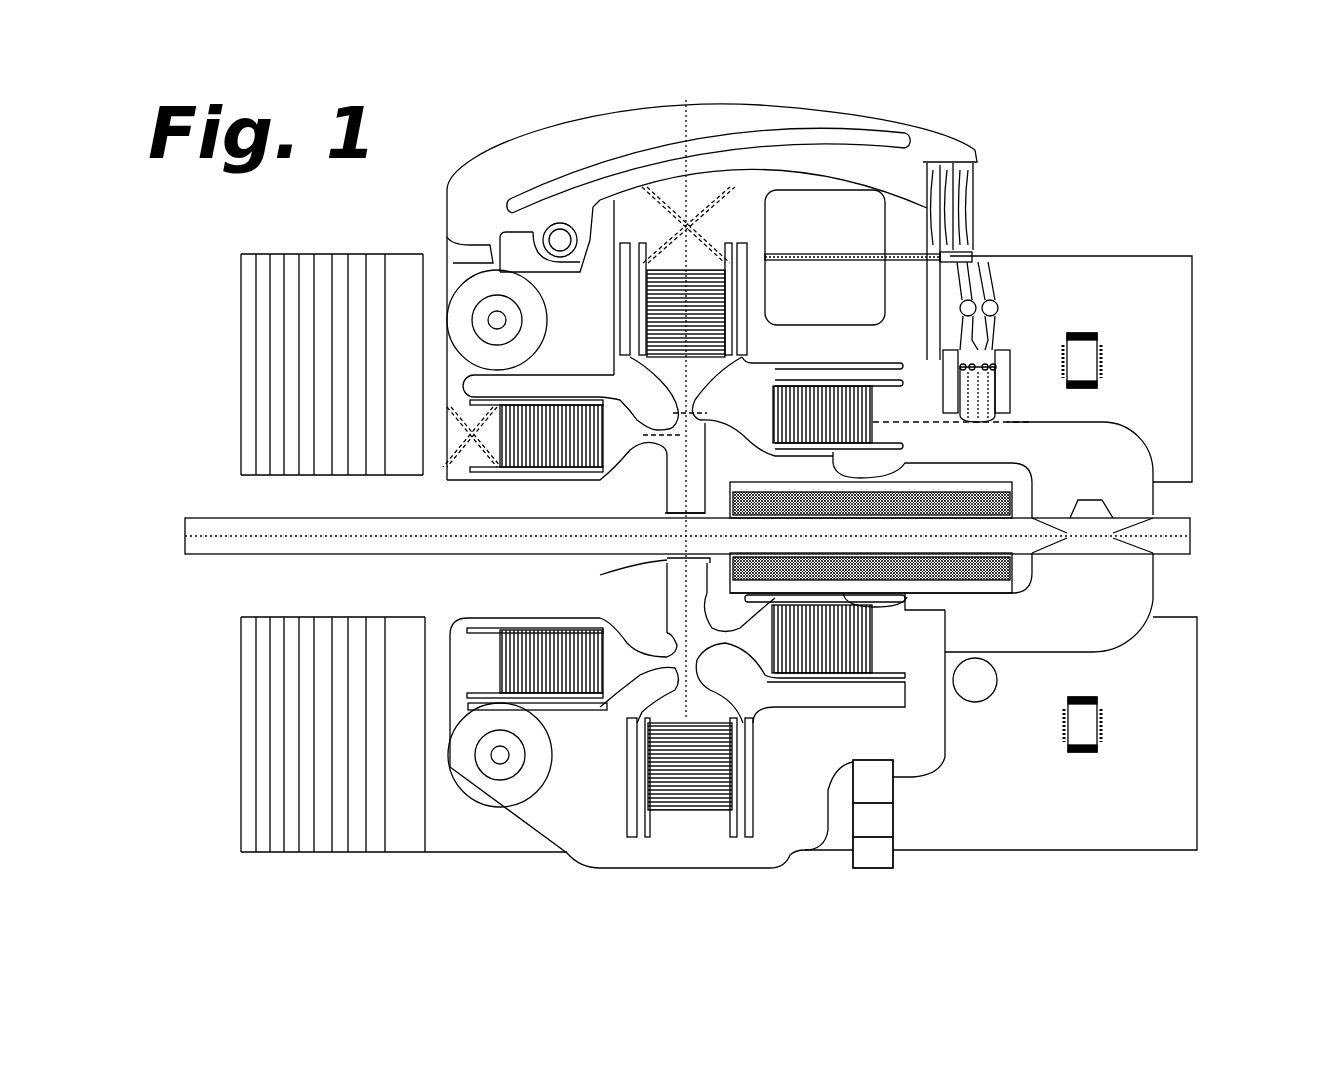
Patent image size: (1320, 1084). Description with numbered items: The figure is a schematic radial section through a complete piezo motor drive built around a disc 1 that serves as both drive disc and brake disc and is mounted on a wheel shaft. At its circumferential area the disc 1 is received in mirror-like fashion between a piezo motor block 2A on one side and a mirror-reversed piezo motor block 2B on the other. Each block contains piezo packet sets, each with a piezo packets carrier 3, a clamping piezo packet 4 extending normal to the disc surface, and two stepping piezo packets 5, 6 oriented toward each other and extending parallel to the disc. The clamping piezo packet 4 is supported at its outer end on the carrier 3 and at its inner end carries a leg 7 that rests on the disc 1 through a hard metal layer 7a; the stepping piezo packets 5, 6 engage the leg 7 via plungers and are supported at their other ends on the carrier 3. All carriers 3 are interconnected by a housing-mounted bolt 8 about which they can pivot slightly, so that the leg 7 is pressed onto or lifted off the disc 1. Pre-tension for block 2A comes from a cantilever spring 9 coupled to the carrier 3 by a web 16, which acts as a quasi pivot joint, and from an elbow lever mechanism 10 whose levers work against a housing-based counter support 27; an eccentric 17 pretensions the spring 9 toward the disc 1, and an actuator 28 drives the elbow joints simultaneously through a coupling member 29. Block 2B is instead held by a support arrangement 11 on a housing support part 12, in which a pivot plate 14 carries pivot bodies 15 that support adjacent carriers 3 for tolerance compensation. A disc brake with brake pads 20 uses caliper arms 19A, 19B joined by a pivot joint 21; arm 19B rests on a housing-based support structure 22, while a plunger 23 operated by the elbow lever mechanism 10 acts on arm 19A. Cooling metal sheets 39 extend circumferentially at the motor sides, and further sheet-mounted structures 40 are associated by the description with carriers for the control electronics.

The disc 1 is at (213, 538).
The piezo motor block 2A is at (437, 223).
The piezo motor block 2B is at (455, 860).
The piezo packets carrier 3 is at (617, 213).
The clamping piezo packet 4 is at (670, 293).
The stepping piezo packet 5 is at (823, 400).
The stepping piezo packet 6 is at (540, 443).
The leg 7 is at (670, 475).
The hard metal layer 7a is at (667, 512).
The bolt 8 is at (500, 320).
The cantilever spring 9 is at (910, 135).
The elbow lever mechanism 10 is at (990, 205).
The support arrangement 11 is at (990, 825).
The housing support part 12 is at (880, 855).
The pivot plate 14 is at (877, 820).
The pivot body 15 is at (880, 790).
The web 16 is at (492, 255).
The eccentric 17 is at (558, 238).
The caliper arm 19A is at (1105, 468).
The caliper arm 19B is at (1105, 603).
The brake pads 20 is at (987, 480).
The pivot joint 21 is at (1097, 523).
The housing-based support structure 22 is at (987, 690).
The plunger 23 is at (983, 410).
The housing-based counter support 27 is at (1003, 403).
The cavity 28 is at (855, 232).
The coupling member 29 is at (907, 263).
The stator laminations 39 is at (285, 352).
The sensor 40 is at (1080, 357).